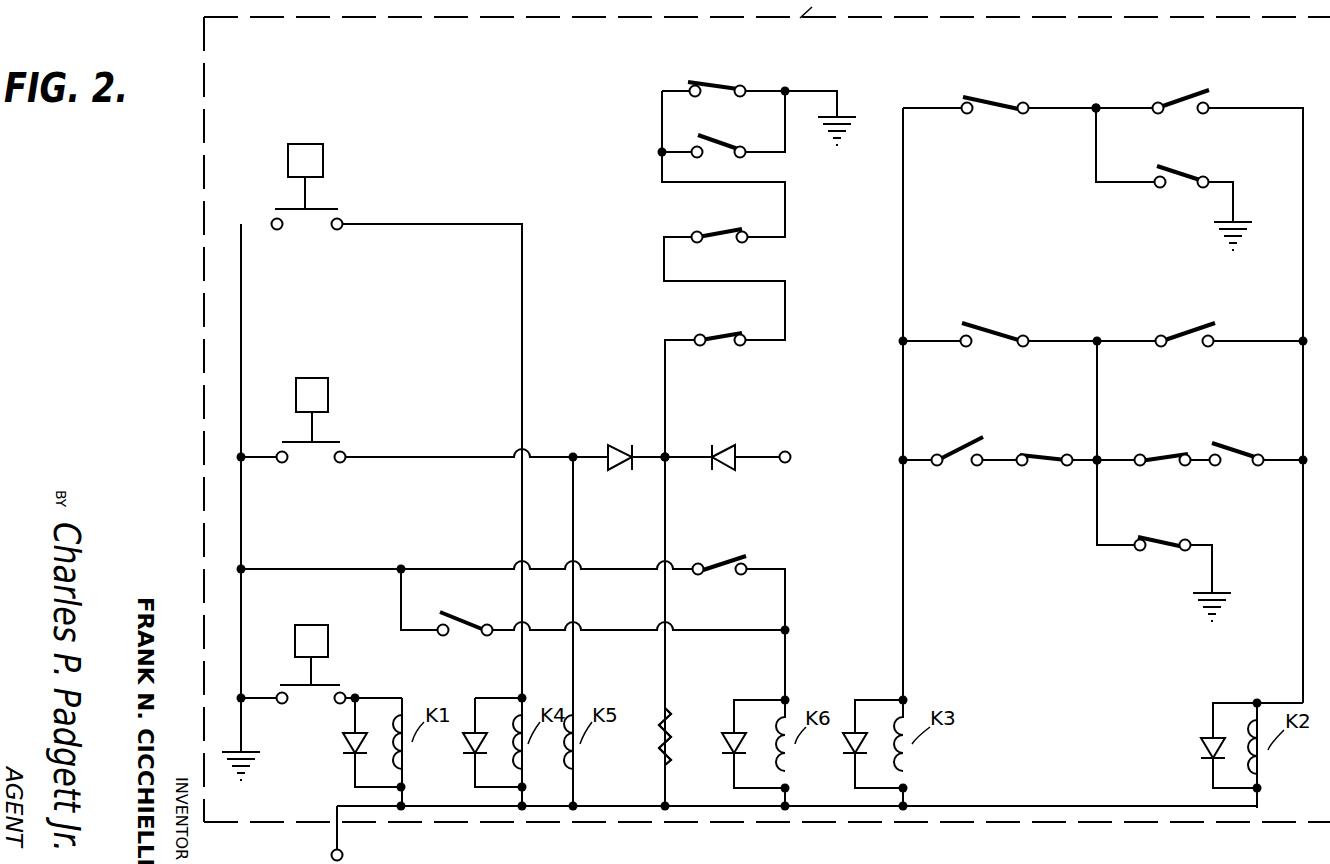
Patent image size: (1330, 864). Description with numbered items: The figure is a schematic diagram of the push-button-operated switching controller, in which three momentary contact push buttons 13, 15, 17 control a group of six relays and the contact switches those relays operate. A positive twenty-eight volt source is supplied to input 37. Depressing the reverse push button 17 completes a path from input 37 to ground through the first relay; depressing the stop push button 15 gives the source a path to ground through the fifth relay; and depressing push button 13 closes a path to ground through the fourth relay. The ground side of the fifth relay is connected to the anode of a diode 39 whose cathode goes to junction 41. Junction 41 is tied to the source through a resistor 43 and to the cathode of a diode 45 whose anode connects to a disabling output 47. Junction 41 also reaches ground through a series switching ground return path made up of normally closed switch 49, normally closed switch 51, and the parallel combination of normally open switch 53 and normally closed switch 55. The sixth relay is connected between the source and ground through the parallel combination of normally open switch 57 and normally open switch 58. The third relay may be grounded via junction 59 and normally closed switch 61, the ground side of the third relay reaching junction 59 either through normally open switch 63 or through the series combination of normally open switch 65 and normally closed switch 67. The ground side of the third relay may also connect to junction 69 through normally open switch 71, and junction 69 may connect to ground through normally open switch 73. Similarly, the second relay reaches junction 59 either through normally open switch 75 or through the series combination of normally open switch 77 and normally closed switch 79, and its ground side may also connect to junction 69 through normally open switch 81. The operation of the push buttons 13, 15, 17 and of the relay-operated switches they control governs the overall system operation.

The push button 13 is at (306, 145).
The stop push button 15 is at (313, 378).
The reverse push button 17 is at (311, 625).
The input 37 is at (342, 853).
The diode 39 is at (622, 445).
The junction 41 is at (665, 460).
The resistor 43 is at (667, 740).
The diode 45 is at (722, 447).
The disabling output 47 is at (790, 450).
The normally closed switch 49 is at (735, 333).
The normally closed switch 51 is at (731, 230).
The normally open switch 53 is at (731, 140).
The normally closed switch 55 is at (718, 83).
The normally open switch 57 is at (727, 560).
The normally open switch 58 is at (470, 620).
The junction 59 is at (1098, 456).
The normally closed switch 61 is at (1160, 542).
The normally open switch 63 is at (992, 324).
The normally open switch 65 is at (961, 444).
The normally closed switch 67 is at (1037, 455).
The junction 69 is at (1096, 108).
The normally open switch 71 is at (982, 97).
The normally open switch 73 is at (1187, 172).
The normally open switch 75 is at (1200, 325).
The normally open switch 77 is at (1233, 444).
The normally closed switch 79 is at (1156, 455).
The normally open switch 81 is at (1196, 90).